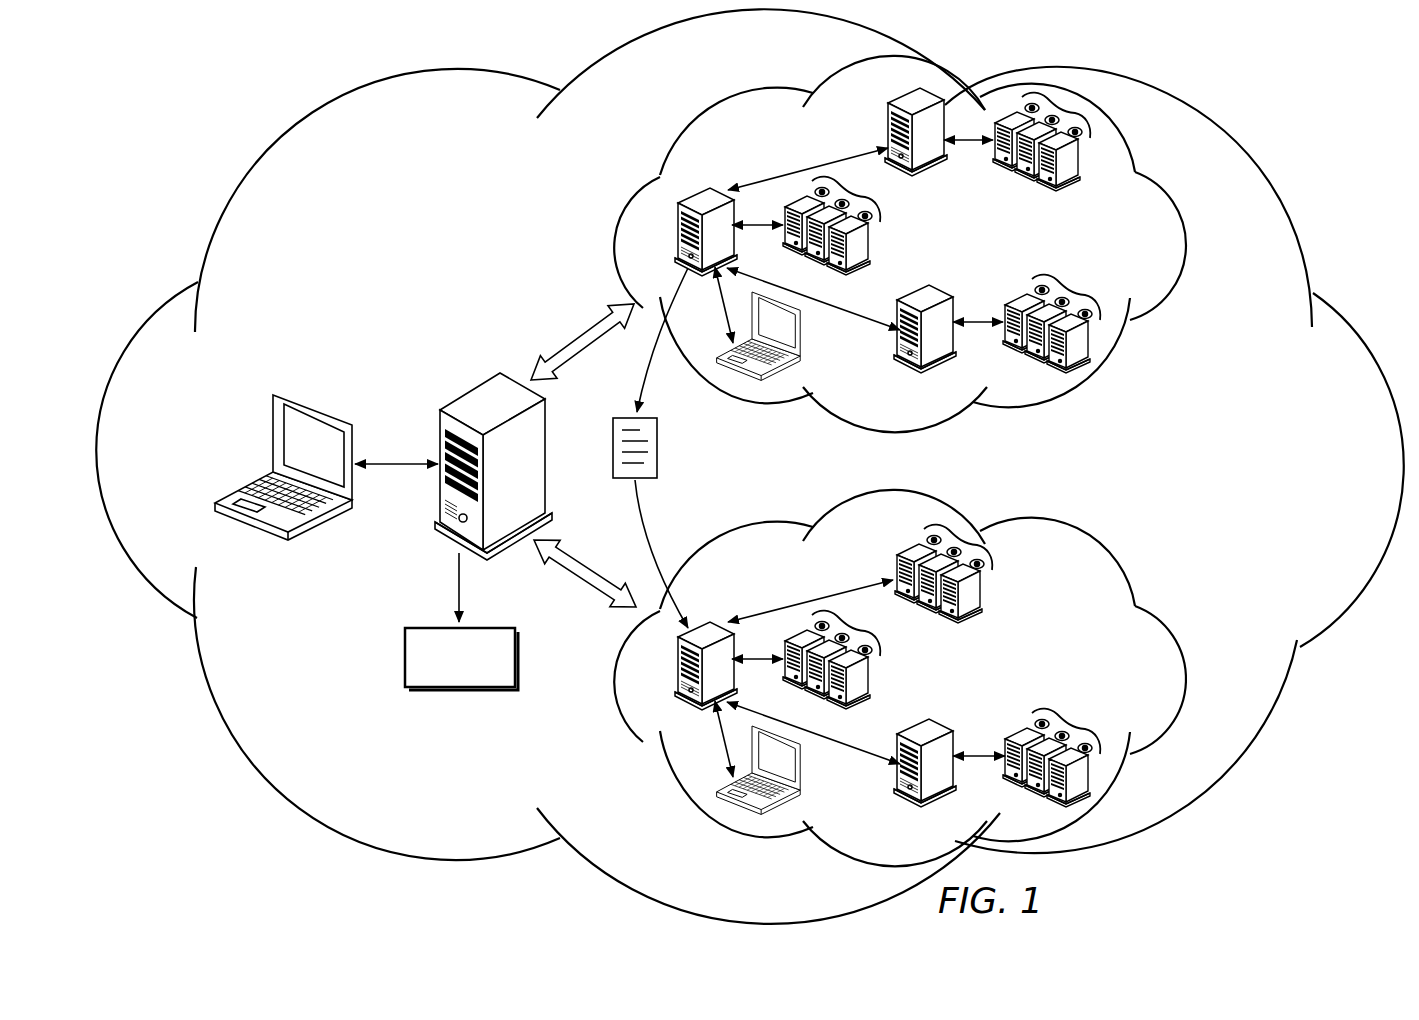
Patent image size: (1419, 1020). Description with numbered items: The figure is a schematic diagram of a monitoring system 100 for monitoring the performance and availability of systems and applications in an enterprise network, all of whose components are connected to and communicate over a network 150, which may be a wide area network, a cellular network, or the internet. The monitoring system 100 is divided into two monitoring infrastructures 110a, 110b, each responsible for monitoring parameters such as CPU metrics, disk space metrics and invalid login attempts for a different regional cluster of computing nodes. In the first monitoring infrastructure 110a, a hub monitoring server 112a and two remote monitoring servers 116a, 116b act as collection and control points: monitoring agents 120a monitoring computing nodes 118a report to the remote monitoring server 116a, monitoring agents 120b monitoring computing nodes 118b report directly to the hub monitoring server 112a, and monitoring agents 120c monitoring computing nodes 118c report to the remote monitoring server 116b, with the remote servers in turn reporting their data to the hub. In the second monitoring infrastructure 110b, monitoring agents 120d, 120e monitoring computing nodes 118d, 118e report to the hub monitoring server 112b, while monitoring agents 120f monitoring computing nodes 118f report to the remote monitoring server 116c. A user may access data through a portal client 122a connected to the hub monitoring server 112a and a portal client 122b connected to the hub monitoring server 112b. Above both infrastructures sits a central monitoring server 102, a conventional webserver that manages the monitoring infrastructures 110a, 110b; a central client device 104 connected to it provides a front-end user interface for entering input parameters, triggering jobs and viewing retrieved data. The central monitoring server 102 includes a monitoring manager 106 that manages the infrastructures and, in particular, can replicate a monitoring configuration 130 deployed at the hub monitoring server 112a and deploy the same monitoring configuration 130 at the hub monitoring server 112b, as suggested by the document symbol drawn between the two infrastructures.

The monitoring system 100 is at (262, 98).
The central monitoring server 102 is at (477, 386).
The central client device 104 is at (318, 530).
The monitoring manager 106 is at (519, 657).
The monitoring infrastructure 110a is at (1175, 246).
The monitoring infrastructure 110b is at (1175, 676).
The hub monitoring server 112a is at (713, 190).
The hub monitoring server 112b is at (713, 624).
The remote monitoring server 116a is at (886, 113).
The remote monitoring server 116b is at (950, 362).
The remote monitoring server 116c is at (950, 796).
The computing nodes 118a is at (1017, 182).
The computing nodes 118b is at (874, 235).
The computing nodes 118c is at (1013, 294).
The computing nodes 118d is at (977, 617).
The computing nodes 118e is at (874, 669).
The computing nodes 118f is at (1013, 728).
The monitoring agents 120a is at (1072, 107).
The monitoring agents 120b is at (853, 198).
The monitoring agents 120c is at (1076, 293).
The monitoring agents 120d is at (962, 534).
The monitoring agents 120e is at (854, 632).
The monitoring agents 120f is at (1074, 726).
The portal client 122a is at (803, 334).
The portal client 122b is at (803, 766).
The monitoring configuration 130 is at (660, 448).
The network 150 is at (1213, 115).